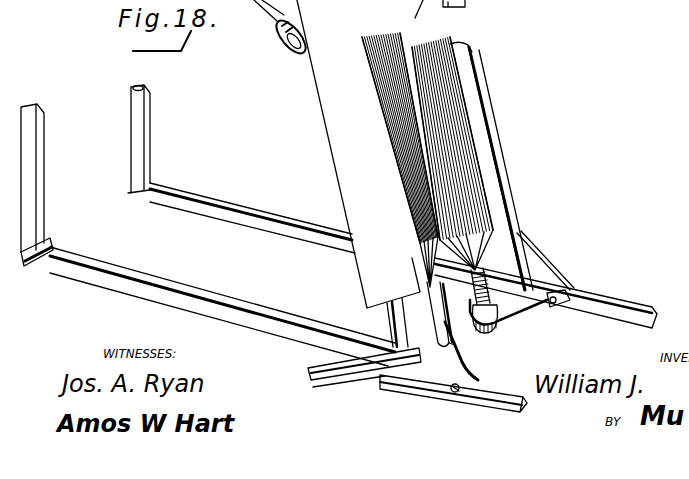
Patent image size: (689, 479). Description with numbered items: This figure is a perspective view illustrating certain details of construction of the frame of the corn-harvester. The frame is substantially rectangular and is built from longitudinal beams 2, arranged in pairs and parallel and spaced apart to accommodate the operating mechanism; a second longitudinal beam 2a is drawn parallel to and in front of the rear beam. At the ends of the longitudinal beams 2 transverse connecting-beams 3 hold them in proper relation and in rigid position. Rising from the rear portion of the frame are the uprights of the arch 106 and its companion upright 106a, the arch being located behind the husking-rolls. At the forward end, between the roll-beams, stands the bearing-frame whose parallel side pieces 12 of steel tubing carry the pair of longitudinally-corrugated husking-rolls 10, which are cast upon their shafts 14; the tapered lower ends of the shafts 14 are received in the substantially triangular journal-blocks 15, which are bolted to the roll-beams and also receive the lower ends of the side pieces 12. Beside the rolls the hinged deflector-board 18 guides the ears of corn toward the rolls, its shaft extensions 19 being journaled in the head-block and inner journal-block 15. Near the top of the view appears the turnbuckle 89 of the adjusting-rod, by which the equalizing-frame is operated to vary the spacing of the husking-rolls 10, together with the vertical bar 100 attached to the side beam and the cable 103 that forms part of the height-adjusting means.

The longitudinal beams 2 is at (232, 219).
The front longitudinal rail 2a is at (165, 295).
The transverse connecting-beams 3 is at (33, 266).
The husking-rolls 10 is at (400, 113).
The side pieces 12 is at (495, 174).
The shafts 14 is at (413, 333).
The journal-blocks 15 is at (442, 363).
The deflector-board 18 is at (358, 154).
The shaft extensions 19 is at (450, 343).
The turnbuckle 89 is at (284, 33).
The vertical bar 100 is at (465, 9).
The cable 103 is at (425, 17).
The arch 106 is at (147, 147).
The front post 106a is at (33, 186).